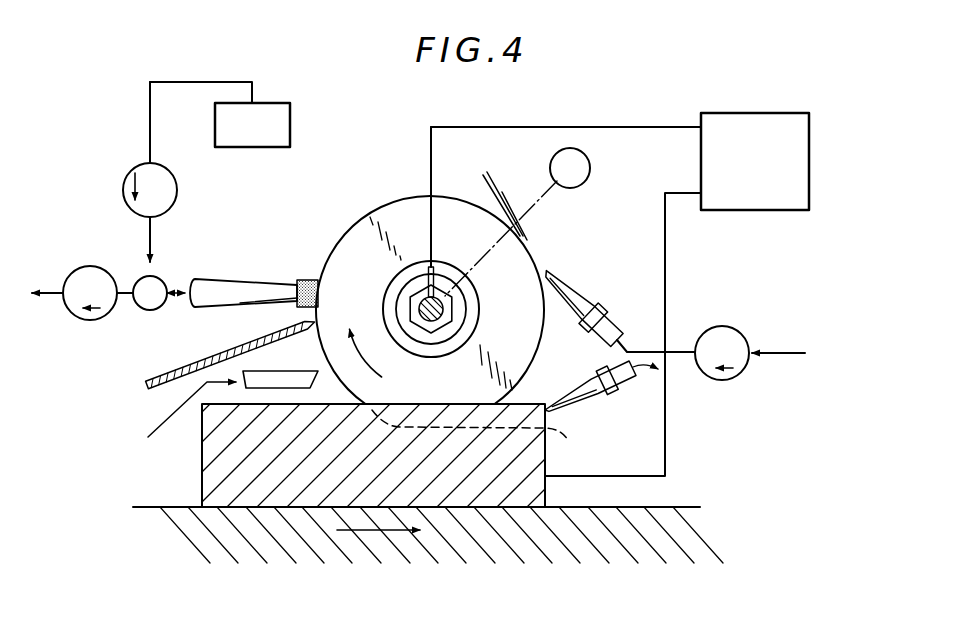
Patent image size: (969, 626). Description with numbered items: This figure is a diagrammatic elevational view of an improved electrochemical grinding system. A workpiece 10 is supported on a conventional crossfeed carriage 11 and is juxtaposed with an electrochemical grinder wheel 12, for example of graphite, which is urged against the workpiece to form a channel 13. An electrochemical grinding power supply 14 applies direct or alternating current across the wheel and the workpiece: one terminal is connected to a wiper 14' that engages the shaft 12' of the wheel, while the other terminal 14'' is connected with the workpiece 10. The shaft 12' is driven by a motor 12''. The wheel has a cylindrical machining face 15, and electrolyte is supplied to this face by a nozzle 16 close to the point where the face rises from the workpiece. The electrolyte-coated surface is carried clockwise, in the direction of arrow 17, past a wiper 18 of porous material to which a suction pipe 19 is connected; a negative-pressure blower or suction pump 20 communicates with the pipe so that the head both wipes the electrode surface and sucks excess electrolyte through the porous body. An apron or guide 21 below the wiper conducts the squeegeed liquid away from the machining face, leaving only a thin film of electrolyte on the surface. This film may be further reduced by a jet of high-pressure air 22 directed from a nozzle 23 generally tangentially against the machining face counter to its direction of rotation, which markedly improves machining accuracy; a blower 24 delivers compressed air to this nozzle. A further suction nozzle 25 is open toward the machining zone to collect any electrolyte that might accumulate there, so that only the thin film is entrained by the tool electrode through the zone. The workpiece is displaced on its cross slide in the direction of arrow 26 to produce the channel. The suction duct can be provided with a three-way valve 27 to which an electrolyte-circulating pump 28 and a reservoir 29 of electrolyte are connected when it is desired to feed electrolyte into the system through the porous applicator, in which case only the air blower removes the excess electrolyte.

The workpiece 10 is at (545, 492).
The crossfeed carriage 11 is at (172, 506).
The electrochemical grinder wheel 12 is at (430, 279).
The shaft 12' is at (463, 309).
The motor 12'' is at (539, 221).
The channel 13 is at (558, 436).
The electrochemical grinding power supply 14 is at (620, 144).
The wiper 14' is at (453, 212).
The other terminal 14'' is at (631, 334).
The cylindrical machining face 15 is at (402, 197).
The nozzle 16 is at (297, 372).
The arrow 17 is at (382, 361).
The wiper 18 is at (312, 280).
The suction pipe 19 is at (240, 279).
The suction pump 20 is at (90, 266).
The apron 21 is at (222, 355).
The jet of high-pressure air 22 is at (497, 183).
The nozzle 23 is at (568, 286).
The blower 24 is at (745, 336).
The suction nozzle 25 is at (587, 394).
The arrow 26 is at (390, 532).
The three-way valve 27 is at (160, 278).
The electrolyte-circulating pump 28 is at (177, 186).
The reservoir 29 is at (290, 121).